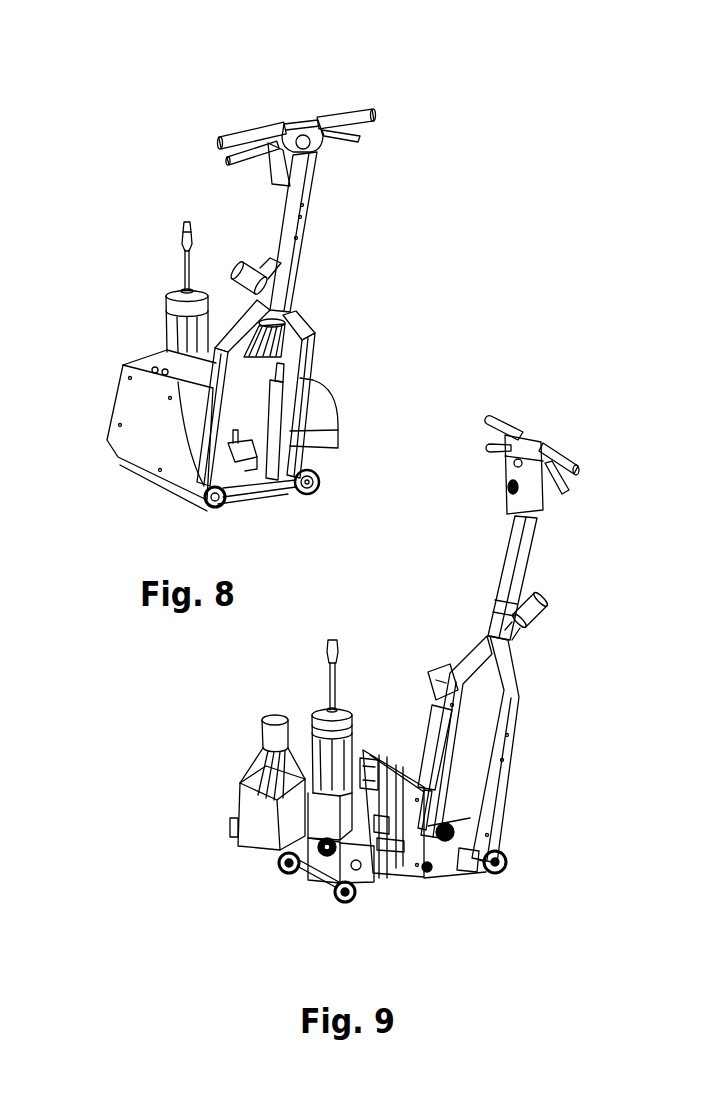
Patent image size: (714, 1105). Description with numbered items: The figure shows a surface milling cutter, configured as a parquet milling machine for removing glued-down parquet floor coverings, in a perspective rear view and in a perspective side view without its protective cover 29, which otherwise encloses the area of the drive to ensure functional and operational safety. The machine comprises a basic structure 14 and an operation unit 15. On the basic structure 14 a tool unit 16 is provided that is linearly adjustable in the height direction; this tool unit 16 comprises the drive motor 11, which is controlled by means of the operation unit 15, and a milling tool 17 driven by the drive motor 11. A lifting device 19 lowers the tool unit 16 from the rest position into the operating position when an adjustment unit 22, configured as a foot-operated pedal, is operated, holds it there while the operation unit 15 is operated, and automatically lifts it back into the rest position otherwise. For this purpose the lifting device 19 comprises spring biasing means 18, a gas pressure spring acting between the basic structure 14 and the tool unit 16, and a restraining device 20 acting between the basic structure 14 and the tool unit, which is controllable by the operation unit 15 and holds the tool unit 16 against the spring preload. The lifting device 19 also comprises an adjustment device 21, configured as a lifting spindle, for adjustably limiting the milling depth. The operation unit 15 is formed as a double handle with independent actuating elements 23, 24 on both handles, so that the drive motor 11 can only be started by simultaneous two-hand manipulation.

In FIG. 8, the drive motor 11 is at (162, 318).
In FIG. 9, the drive motor 11 is at (314, 718).
In FIG. 9, the basic structure 14 is at (432, 856).
In FIG. 8, the operation unit 15 is at (302, 93).
In FIG. 9, the operation unit 15 is at (540, 413).
In FIG. 9, the tool unit 16 is at (242, 677).
In FIG. 9, the milling tool 17 is at (257, 857).
In FIG. 9, the spring biasing means 18 is at (387, 858).
In FIG. 9, the lifting device 19 is at (392, 736).
In FIG. 9, the restraining device 20 is at (404, 868).
In FIG. 9, the adjustment device 21 is at (363, 757).
In FIG. 8, the adjustment unit 22 is at (241, 458).
In FIG. 9, the actuating element 23 is at (560, 489).
In FIG. 9, the actuating element 24 is at (490, 448).
In FIG. 8, the protective cover 29 is at (155, 358).